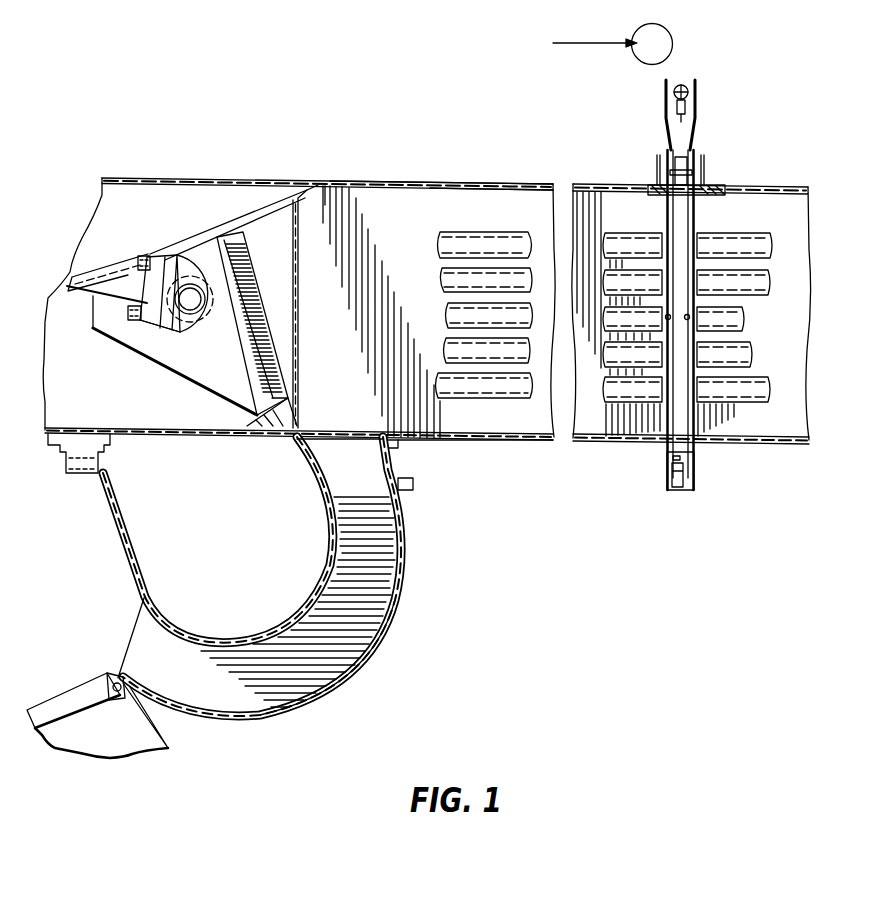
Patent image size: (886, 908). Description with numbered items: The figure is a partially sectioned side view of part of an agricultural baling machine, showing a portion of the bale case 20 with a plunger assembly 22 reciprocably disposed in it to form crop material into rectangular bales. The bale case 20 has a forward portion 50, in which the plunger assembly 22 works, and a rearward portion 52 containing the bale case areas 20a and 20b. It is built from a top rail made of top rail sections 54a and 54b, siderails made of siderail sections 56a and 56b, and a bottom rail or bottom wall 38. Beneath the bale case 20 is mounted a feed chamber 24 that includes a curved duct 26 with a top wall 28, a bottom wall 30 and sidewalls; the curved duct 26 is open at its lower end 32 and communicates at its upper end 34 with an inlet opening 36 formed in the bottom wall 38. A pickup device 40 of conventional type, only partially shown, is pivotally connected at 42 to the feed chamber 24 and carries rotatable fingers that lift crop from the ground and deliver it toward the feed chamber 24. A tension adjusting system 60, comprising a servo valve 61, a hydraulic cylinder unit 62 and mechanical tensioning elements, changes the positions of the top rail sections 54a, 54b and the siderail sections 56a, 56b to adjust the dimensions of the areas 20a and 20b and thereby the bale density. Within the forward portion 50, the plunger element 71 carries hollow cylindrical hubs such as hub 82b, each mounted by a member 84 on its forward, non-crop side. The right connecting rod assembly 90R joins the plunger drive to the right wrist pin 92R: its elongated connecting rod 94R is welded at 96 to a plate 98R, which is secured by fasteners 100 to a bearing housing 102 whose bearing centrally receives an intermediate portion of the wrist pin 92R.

The bale case 20 is at (536, 154).
The bale case area 20a is at (444, 326).
The bale case area 20b is at (804, 332).
The plunger assembly 22 is at (164, 160).
The feed chamber 24 is at (416, 582).
The curved duct 26 is at (306, 669).
The top wall 28 is at (292, 598).
The bottom wall 30 is at (376, 664).
The lower end 32 is at (164, 661).
The upper end 34 is at (356, 469).
The inlet opening 36 is at (350, 430).
The bottom wall 38 is at (460, 440).
The pickup device 40 is at (106, 735).
The pivotal connection 42 is at (104, 678).
The forward portion 50 is at (264, 180).
The rearward portion 52 is at (366, 181).
The top rail section 54a is at (462, 184).
The top rail section 54b is at (745, 188).
The siderail section 56a is at (495, 233).
The siderail section 56b is at (733, 236).
The tension adjusting system 60 is at (718, 102).
The servo valve 61 is at (660, 36).
The hydraulic cylinder unit 62 is at (687, 84).
The plunger element 71 is at (295, 281).
The hub 82b is at (188, 282).
The member 84 is at (232, 388).
The right connecting rod assembly 90R is at (158, 298).
The right wrist pin 92R is at (192, 306).
The connecting rod 94R is at (90, 255).
The weld 96 is at (94, 311).
The plate 98R is at (150, 322).
The fasteners 100 is at (128, 315).
The bearing housing 102 is at (182, 330).